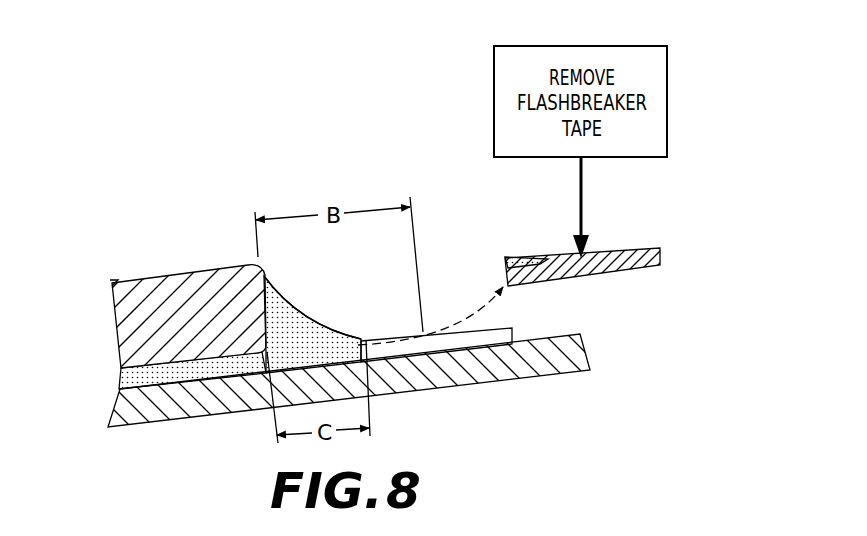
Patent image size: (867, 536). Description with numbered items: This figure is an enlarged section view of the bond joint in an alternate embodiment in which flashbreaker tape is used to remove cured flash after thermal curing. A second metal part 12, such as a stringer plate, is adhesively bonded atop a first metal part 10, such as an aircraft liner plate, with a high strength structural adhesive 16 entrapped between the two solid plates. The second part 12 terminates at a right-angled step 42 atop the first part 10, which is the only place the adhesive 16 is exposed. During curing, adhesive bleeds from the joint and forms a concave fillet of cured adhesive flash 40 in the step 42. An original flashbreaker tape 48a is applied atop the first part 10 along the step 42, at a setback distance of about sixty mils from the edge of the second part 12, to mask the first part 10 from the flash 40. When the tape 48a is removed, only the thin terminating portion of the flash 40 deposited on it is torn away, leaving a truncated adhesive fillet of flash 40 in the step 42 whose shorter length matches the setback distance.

The first metal part 10 is at (114, 403).
The second metal part 12 is at (108, 320).
The structural adhesive 16 is at (120, 375).
The cured adhesive flash 40 is at (313, 313).
The right-angled step 42 is at (281, 285).
The original flashbreaker tape 48a is at (604, 252).